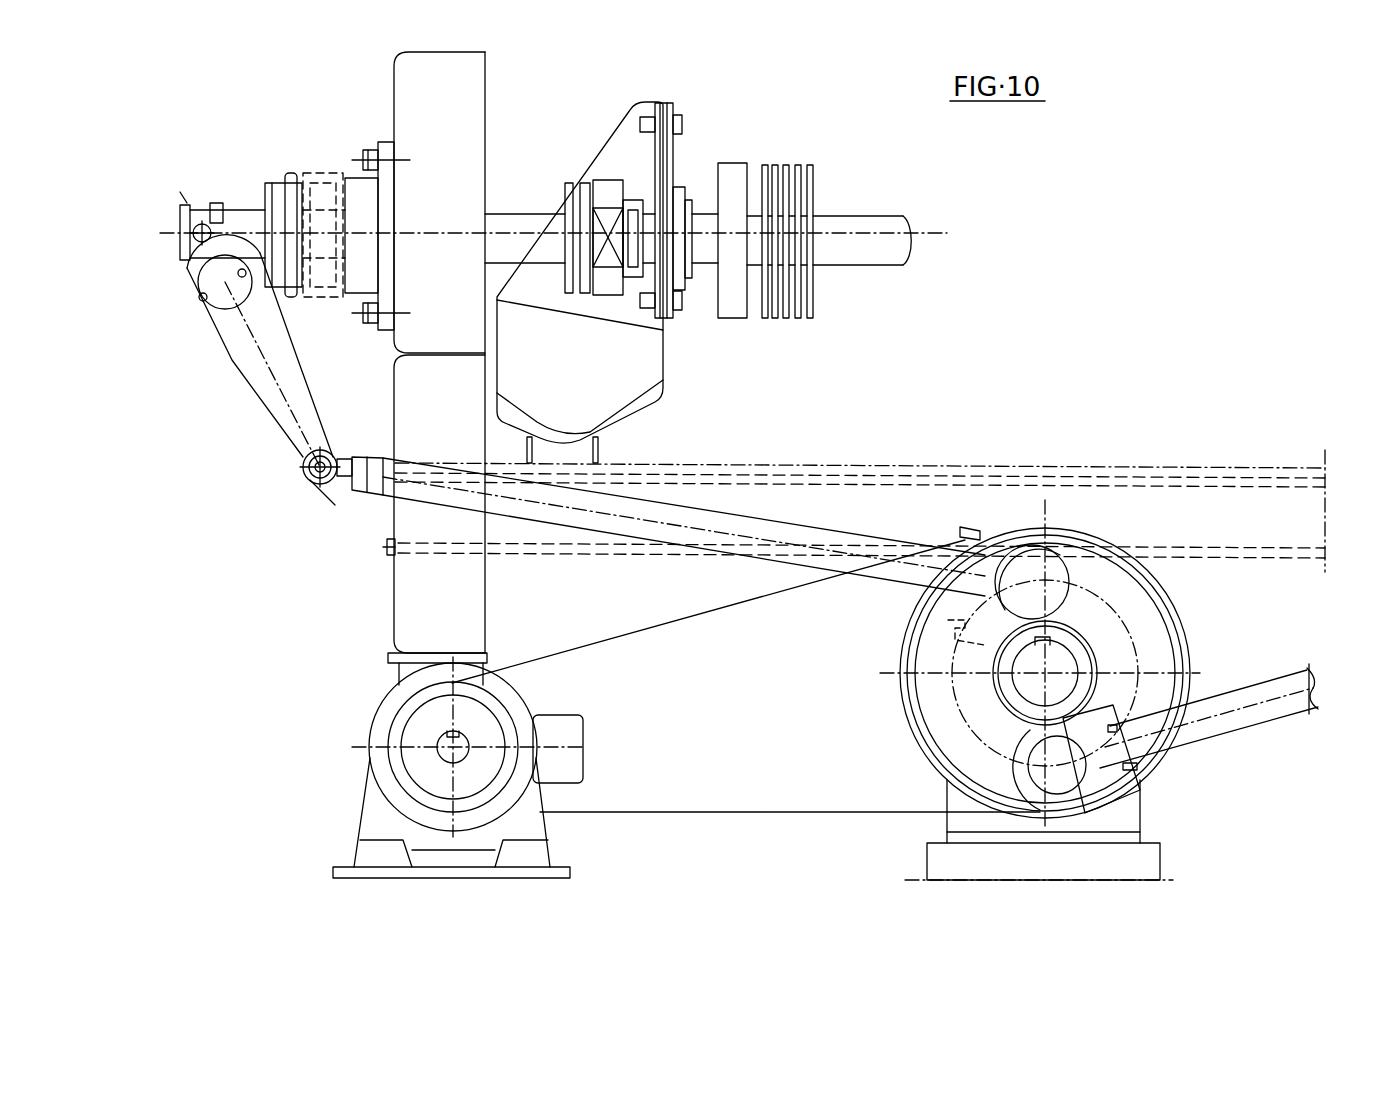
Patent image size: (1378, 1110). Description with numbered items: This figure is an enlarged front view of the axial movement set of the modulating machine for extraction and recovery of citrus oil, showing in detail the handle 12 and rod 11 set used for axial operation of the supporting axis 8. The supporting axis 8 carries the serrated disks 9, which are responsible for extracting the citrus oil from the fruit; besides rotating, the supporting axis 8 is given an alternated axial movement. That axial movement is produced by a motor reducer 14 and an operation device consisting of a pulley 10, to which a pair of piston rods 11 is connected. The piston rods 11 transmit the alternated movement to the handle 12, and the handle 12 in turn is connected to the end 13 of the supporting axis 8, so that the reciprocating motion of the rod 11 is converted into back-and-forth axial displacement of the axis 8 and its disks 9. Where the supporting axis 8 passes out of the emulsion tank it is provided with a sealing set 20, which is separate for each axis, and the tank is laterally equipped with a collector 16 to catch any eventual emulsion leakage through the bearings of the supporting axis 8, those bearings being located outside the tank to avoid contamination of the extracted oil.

The supporting axis 8 is at (837, 230).
The serrated disks 9 is at (784, 164).
The pulley 10 is at (1113, 705).
The piston rods 11 is at (672, 518).
The handle 12 is at (236, 365).
The end of supporting axis 13 is at (243, 222).
The motor reducer 14 is at (420, 732).
The collectors 16 is at (642, 364).
The sealing set 20 is at (700, 116).